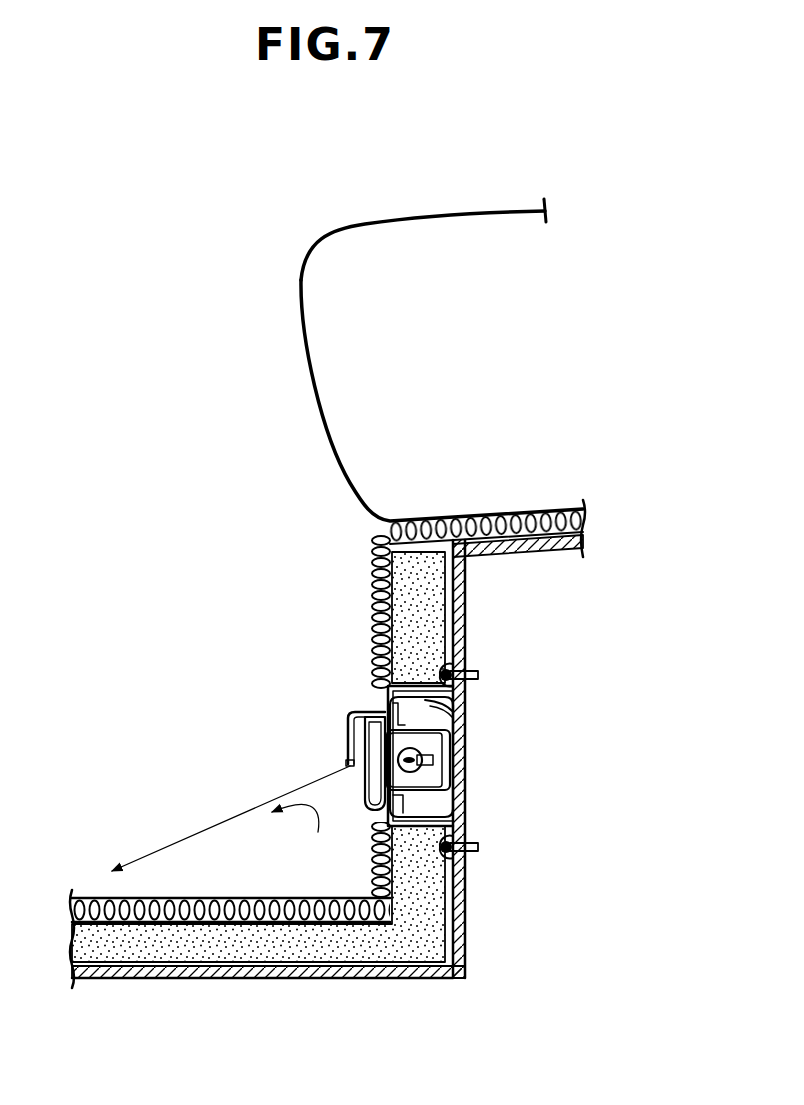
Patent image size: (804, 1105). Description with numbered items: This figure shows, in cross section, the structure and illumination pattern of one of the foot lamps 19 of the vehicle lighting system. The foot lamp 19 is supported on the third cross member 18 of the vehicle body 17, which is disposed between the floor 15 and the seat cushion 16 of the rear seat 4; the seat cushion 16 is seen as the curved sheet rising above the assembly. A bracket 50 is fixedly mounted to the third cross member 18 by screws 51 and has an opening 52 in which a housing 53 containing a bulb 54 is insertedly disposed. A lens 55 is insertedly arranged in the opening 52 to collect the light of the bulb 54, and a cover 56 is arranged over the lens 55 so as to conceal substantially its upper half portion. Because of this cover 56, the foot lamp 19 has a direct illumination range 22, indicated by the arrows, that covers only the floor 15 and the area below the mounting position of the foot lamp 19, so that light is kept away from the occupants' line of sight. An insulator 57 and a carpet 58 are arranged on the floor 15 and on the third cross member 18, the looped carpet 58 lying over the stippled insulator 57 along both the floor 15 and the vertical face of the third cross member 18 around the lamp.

The rear seat 4 is at (284, 275).
The floor 15 is at (175, 975).
The seat cushion 16 is at (330, 378).
The vehicle body 17 is at (457, 917).
The third cross member 18 is at (466, 870).
The foot lamp 19 is at (472, 773).
The direct illumination range 22 is at (356, 856).
The bracket 50 is at (440, 705).
The screws 51 is at (463, 677).
The opening 52 is at (365, 713).
The housing 53 is at (425, 723).
The bulb 54 is at (420, 742).
The lens 55 is at (350, 762).
The cover 56 is at (348, 740).
The insulator 57 is at (430, 596).
The carpet 58 is at (380, 548).